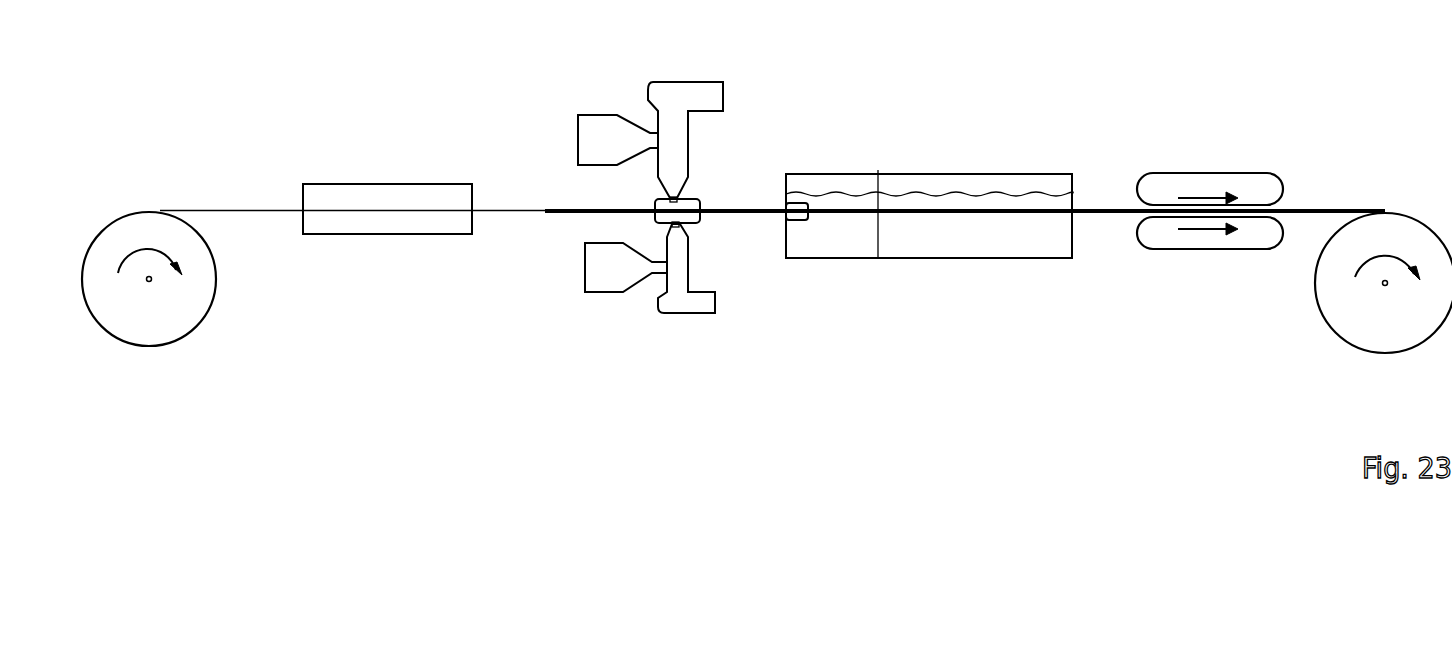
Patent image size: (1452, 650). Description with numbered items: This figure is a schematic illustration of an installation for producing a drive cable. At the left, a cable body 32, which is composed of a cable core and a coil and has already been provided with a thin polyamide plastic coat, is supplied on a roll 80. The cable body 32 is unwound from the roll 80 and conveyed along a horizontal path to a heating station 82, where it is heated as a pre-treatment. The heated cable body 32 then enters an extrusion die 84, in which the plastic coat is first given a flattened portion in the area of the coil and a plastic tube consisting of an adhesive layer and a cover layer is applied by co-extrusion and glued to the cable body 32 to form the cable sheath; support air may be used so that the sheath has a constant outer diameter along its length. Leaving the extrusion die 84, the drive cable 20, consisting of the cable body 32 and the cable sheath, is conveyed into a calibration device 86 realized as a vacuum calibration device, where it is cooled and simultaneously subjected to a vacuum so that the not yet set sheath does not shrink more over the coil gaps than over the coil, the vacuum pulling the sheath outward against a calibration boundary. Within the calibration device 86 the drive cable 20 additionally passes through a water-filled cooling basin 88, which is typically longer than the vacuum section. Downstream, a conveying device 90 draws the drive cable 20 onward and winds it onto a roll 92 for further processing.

The roll 80 is at (155, 300).
The cable body 32 is at (217, 210).
The heating station 82 is at (391, 227).
The extrusion die 84 is at (681, 313).
The drive cable 20 is at (754, 222).
The calibration device 86 is at (1018, 258).
The cooling basin 88 is at (895, 247).
The conveying device 90 is at (1196, 249).
The roll 92 is at (1382, 300).